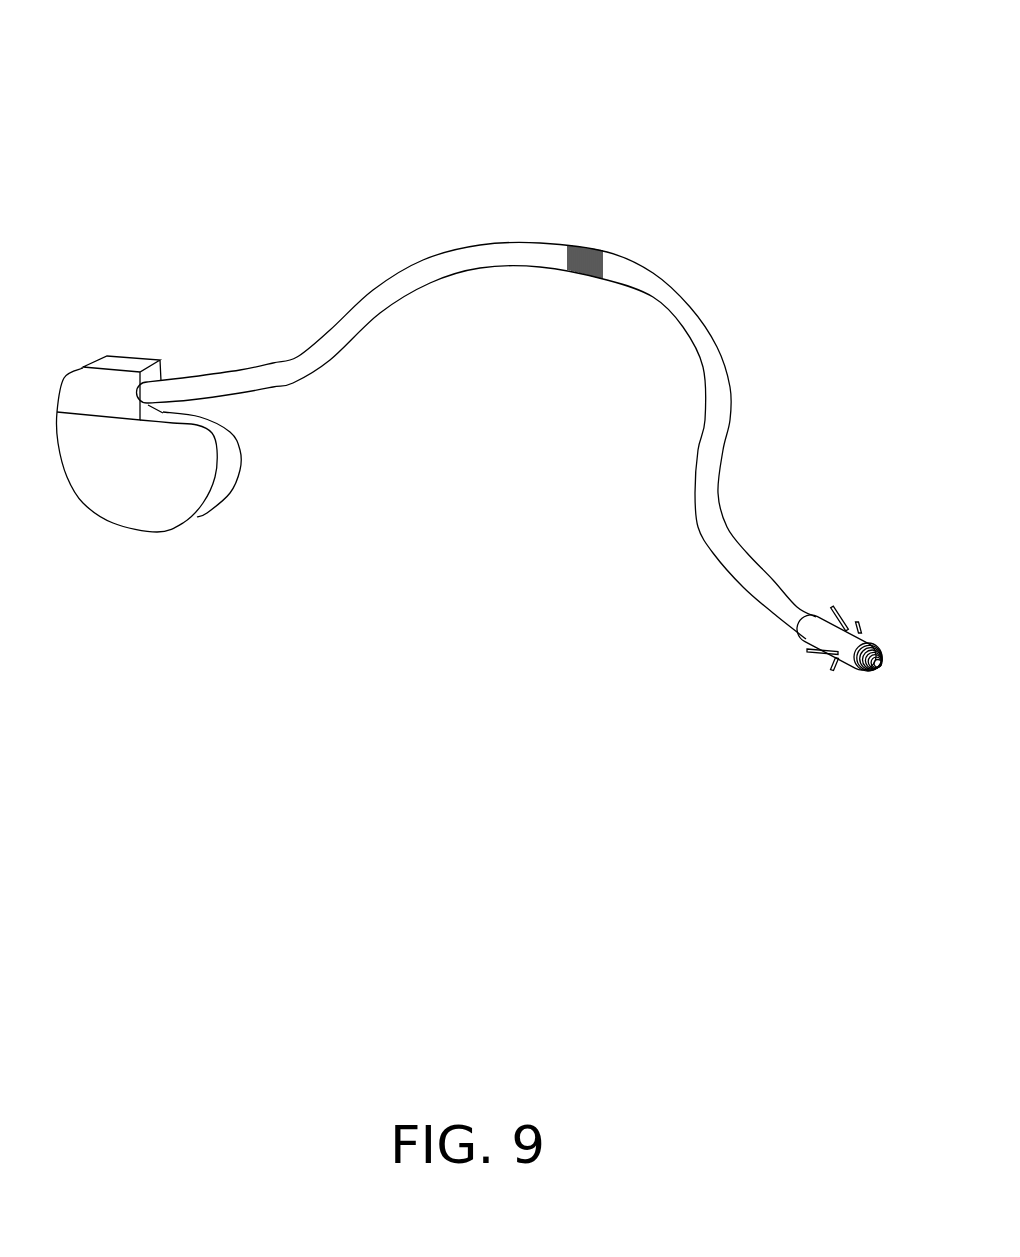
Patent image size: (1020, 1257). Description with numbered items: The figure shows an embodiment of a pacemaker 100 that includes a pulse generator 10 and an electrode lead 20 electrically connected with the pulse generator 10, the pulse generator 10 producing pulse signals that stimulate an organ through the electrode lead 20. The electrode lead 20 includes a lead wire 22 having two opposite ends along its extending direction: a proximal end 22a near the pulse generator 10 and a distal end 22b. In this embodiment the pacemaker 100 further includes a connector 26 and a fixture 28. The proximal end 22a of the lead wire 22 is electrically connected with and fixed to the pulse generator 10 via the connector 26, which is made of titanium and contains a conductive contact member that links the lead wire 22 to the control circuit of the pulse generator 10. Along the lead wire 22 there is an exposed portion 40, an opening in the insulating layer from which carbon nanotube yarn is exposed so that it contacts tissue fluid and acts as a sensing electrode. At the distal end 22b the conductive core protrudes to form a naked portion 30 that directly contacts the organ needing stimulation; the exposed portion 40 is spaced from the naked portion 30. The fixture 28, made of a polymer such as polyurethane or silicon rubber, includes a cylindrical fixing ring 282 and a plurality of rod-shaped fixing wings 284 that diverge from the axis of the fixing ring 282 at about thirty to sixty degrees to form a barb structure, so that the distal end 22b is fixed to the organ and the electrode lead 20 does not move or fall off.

The pacemaker 100 is at (452, 42).
The pulse generator 10 is at (148, 452).
The connector 26 is at (123, 408).
The electrode lead 20 is at (527, 485).
The lead wire 22 is at (637, 277).
The proximal end 22a is at (182, 387).
The distal end 22b is at (868, 640).
The exposed portion 40 is at (590, 252).
The naked portion 30 is at (872, 672).
The fixture 28 is at (769, 694).
The fixing ring 282 is at (818, 629).
The fixing wings 284 is at (807, 652).